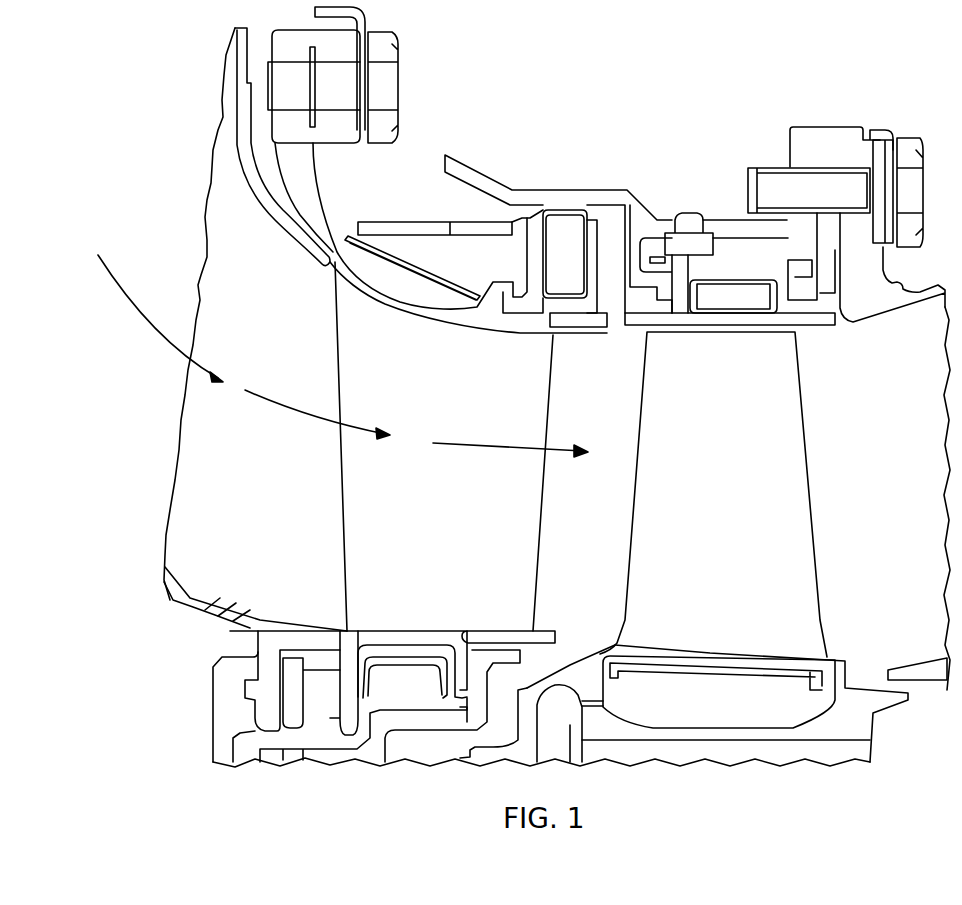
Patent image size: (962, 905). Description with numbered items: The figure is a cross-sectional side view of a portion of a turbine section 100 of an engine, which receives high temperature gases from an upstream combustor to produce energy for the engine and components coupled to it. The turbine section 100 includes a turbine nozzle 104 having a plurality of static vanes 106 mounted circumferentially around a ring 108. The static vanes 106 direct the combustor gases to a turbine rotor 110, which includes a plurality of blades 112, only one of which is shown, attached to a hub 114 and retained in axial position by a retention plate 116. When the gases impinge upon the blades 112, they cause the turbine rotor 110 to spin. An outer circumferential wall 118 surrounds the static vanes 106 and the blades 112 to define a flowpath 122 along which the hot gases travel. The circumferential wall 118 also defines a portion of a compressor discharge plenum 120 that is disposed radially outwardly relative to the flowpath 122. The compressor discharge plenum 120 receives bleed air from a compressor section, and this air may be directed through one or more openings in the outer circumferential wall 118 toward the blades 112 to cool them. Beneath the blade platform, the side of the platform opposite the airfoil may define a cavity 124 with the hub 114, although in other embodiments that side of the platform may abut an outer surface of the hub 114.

The turbine section 100 is at (557, 348).
The turbine nozzle 104 is at (228, 450).
The static vanes 106 is at (393, 615).
The ring 108 is at (463, 641).
The turbine rotor 110 is at (781, 747).
The blades 112 is at (767, 513).
The hub 114 is at (727, 753).
The retention plate 116 is at (538, 707).
The outer circumferential wall 118 is at (585, 326).
The compressor discharge plenum 120 is at (538, 99).
The flowpath 122 is at (282, 334).
The cavity 124 is at (740, 709).